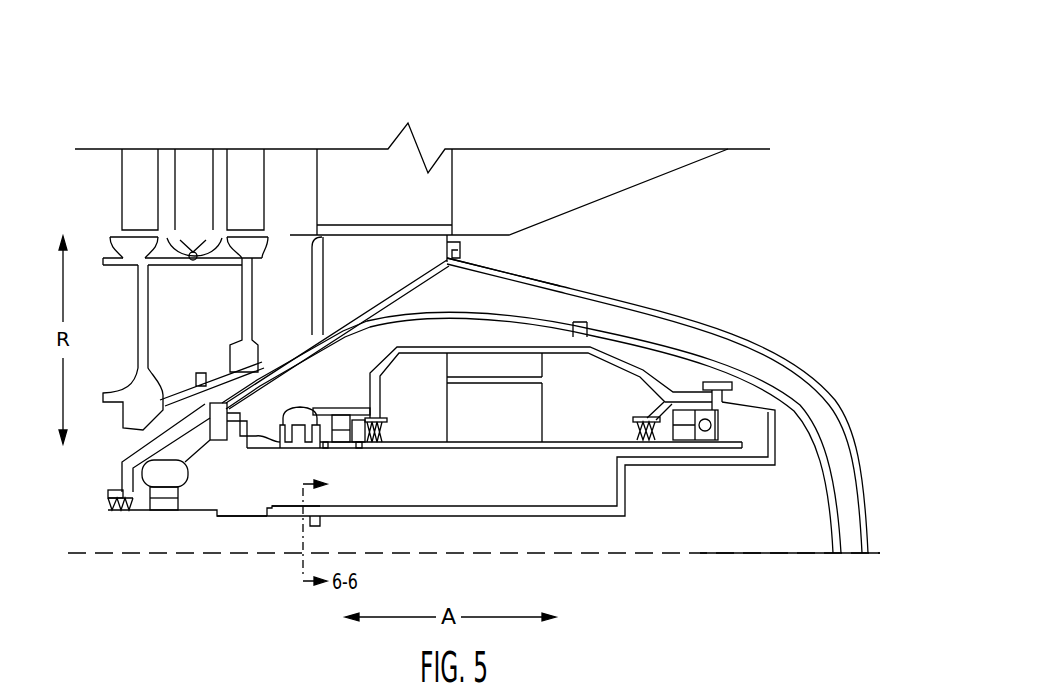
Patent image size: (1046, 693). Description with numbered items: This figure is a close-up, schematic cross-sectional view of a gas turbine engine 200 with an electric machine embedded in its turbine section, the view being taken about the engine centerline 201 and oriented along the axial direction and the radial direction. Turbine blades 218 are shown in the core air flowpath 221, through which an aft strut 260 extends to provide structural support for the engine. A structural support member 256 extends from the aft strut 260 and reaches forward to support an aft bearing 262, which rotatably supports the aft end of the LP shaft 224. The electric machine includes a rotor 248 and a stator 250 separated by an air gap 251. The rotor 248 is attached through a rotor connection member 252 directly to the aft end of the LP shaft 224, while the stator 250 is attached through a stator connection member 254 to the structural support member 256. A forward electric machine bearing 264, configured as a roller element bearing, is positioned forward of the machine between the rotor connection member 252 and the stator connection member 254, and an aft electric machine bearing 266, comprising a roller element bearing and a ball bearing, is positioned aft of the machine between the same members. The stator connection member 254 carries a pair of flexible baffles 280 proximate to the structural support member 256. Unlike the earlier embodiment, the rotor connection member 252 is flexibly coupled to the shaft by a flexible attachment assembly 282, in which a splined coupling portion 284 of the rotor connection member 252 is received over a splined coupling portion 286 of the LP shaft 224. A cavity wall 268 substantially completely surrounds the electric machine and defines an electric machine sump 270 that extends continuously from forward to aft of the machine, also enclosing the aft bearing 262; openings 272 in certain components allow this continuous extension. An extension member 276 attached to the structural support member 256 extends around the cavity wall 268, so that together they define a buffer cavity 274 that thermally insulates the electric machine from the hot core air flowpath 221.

The turbofan engine 200 is at (623, 100).
The engine centerline 201 is at (737, 556).
The compressor rotor blade 218 is at (192, 170).
The core air flowpath 221 is at (288, 170).
The LP shaft 224 is at (135, 522).
The rotor 248 is at (530, 362).
The stator 250 is at (498, 424).
The air gap 251 is at (553, 380).
The rotor connection member 252 is at (502, 348).
The stator connection member 254 is at (443, 449).
The structural support member 256 is at (382, 296).
The aft strut 260 is at (440, 200).
The aft bearing 262 is at (163, 503).
The forward electric machine bearing 264 is at (336, 418).
The aft electric machine bearing 266 is at (742, 428).
The cavity wall 268 is at (310, 358).
The electric machine sump 270 is at (238, 475).
The openings 272 is at (330, 467).
The buffer cavity 274 is at (497, 287).
The extension member 276 is at (662, 312).
The baffles 280 is at (301, 409).
The flexible attachment assembly 282 is at (286, 545).
The splined coupling portion 284 is at (288, 506).
The splined coupling portion 286 is at (280, 528).